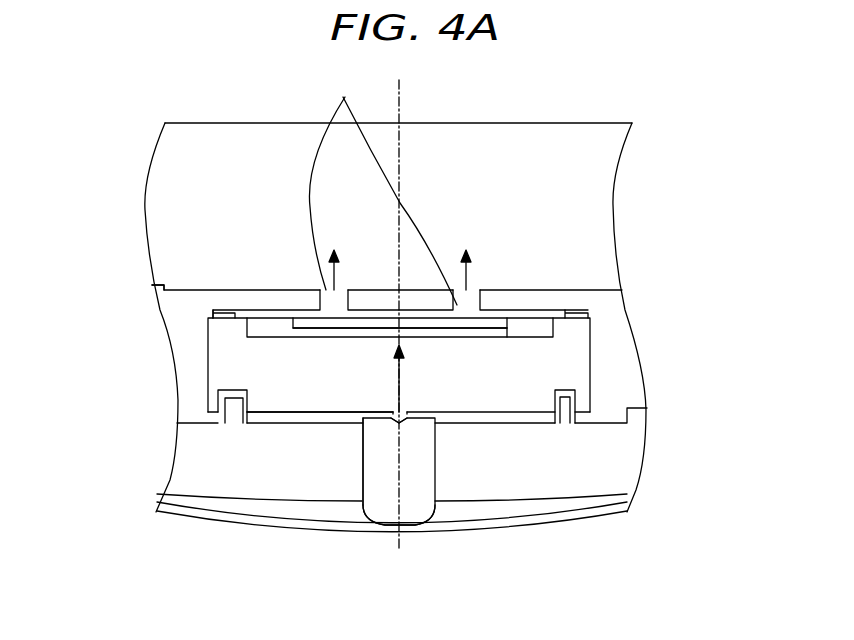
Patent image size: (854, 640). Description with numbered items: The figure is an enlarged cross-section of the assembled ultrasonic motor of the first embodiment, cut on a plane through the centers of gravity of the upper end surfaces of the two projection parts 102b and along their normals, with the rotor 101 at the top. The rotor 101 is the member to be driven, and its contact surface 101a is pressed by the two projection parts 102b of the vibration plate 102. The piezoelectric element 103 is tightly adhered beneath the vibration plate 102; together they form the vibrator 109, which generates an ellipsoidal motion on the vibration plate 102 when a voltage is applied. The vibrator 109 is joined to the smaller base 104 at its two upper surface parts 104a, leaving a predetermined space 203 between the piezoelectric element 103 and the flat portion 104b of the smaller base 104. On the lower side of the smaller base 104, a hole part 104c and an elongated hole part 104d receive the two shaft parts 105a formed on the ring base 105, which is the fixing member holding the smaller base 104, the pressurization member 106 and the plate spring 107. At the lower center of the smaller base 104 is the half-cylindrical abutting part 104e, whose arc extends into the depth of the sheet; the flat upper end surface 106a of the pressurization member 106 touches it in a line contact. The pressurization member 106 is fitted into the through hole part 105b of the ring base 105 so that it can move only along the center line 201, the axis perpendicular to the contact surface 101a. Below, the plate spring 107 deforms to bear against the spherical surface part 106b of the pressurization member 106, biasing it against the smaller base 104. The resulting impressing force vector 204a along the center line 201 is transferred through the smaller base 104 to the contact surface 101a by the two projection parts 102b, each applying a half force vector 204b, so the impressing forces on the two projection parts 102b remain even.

The rotor 101 is at (264, 137).
The contact surface 101a is at (205, 292).
The vibration plate 102 is at (588, 313).
The projection parts 102b is at (340, 298).
The piezoelectric element 103 is at (493, 323).
The smaller base 104 is at (578, 369).
The upper surface parts 104a is at (232, 318).
The flat portion 104b is at (525, 335).
The hole part 104c is at (560, 396).
The elongated hole part 104d is at (228, 392).
The abutting part 104e is at (403, 419).
The ring base 105 is at (615, 459).
The shaft parts 105a is at (230, 409).
The through hole part 105b is at (363, 468).
The pressurization member 106 is at (386, 508).
The upper end surface 106a is at (407, 416).
The spherical surface part 106b is at (378, 526).
The plate spring 107 is at (502, 528).
The vibrator 109 is at (503, 324).
The center line 201 is at (400, 94).
The predetermined space 203 is at (313, 335).
The impressing force vector 204a is at (365, 385).
The half impressing force vector 204b is at (383, 187).